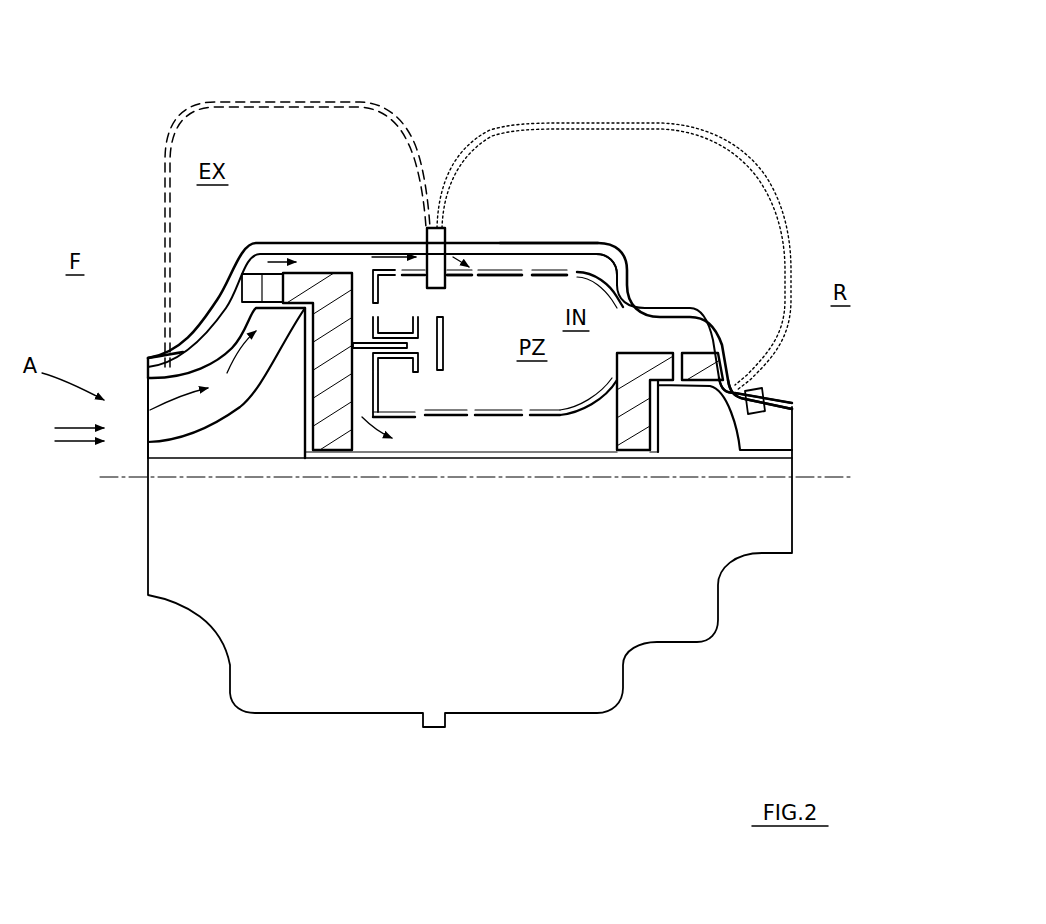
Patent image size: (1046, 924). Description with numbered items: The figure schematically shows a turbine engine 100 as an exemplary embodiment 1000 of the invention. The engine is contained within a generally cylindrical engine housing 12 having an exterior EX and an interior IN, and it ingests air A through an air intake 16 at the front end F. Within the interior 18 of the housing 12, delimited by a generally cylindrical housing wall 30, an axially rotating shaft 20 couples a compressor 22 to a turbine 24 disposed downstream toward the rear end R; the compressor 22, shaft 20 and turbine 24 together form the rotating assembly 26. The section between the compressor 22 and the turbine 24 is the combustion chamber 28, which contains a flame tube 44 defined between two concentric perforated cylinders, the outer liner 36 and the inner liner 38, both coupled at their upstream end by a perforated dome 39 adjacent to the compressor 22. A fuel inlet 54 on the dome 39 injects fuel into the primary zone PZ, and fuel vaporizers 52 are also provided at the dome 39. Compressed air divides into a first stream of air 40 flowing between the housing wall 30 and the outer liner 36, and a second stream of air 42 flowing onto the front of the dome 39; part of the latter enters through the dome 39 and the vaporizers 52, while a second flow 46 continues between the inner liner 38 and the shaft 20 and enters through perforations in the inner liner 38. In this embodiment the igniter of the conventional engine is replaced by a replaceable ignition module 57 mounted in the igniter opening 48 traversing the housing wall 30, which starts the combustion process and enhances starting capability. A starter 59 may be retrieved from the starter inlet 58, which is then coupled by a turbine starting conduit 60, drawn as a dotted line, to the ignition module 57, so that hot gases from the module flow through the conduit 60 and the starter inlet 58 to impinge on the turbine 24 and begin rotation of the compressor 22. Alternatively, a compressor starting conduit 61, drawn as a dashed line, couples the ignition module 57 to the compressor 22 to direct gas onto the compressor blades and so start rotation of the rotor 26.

The engine housing 12 is at (622, 252).
The air intake 16 is at (140, 372).
The interior 18 is at (597, 266).
The shaft 20 is at (346, 462).
The compressor 22 is at (272, 432).
The turbine 24 is at (782, 437).
The rotating assembly 26 is at (446, 538).
The combustion chamber 28 is at (526, 300).
The housing wall 30 is at (541, 242).
The outer liner 36 is at (547, 300).
The inner liner 38 is at (497, 420).
The dome 39 is at (380, 287).
The first stream of air 40 is at (262, 274).
The second stream of air 42 is at (392, 316).
The flame tube 44 is at (610, 338).
The second flow 46 is at (368, 425).
The igniter opening 48 is at (424, 232).
The fuel vaporizers 52 is at (444, 338).
The fuel inlet 54 is at (408, 345).
The replaceable ignition module 57 is at (448, 286).
The starter inlet 58 is at (734, 352).
The starter 59 is at (757, 398).
The turbine starting conduit 60 is at (763, 171).
The compressor starting conduit 61 is at (164, 205).
The turbine engine 100 is at (272, 186).
The exemplary embodiment 1000 is at (654, 198).